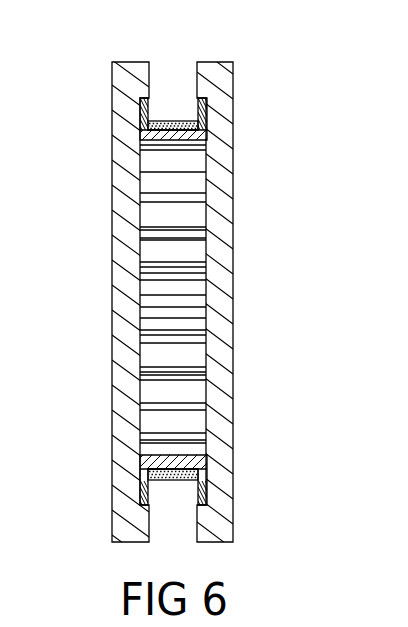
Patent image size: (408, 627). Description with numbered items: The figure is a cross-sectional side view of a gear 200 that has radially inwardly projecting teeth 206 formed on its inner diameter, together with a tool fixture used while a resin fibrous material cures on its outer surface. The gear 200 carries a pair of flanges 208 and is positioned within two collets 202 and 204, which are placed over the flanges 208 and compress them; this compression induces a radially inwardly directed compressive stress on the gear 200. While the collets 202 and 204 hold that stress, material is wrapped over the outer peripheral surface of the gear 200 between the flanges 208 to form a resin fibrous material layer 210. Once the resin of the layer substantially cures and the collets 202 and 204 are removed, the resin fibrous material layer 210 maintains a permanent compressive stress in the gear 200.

The gear 200 is at (269, 267).
The collet 202 is at (121, 93).
The collet 204 is at (222, 103).
The radially inwardly projecting teeth 206 is at (178, 357).
The flanges 208 is at (145, 493).
The resin fibrous material layer 210 is at (173, 126).